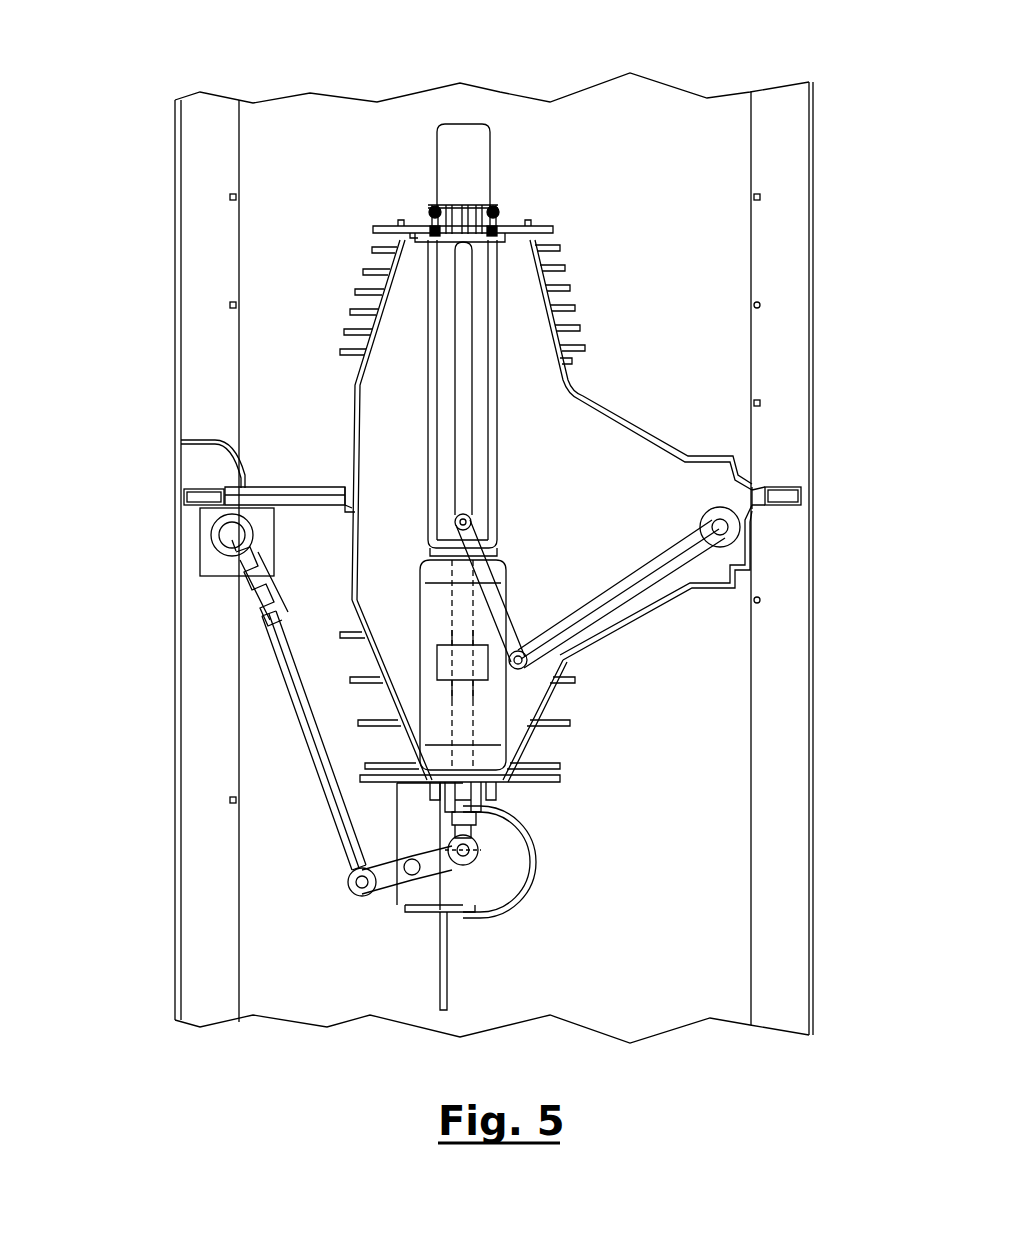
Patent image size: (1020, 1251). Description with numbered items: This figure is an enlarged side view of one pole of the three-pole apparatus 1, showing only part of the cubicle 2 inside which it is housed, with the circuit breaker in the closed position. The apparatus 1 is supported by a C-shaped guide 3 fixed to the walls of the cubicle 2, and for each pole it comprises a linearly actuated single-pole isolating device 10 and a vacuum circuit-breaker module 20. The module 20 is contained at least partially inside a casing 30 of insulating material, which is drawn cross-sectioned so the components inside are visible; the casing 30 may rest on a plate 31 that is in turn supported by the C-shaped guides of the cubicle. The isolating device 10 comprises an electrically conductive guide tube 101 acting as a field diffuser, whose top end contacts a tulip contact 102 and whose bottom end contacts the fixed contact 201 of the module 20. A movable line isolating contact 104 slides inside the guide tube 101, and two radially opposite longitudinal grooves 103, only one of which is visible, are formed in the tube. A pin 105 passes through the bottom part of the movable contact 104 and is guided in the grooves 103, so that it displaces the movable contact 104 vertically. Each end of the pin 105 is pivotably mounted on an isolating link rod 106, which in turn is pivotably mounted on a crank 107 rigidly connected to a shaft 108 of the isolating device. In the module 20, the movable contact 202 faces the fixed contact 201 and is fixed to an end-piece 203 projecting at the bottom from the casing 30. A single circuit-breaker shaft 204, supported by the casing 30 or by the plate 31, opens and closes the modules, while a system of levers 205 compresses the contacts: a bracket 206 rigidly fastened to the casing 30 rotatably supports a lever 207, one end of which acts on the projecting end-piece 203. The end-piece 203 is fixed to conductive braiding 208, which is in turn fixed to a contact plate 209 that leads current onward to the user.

The three-pole apparatus 1 is at (338, 176).
The cubicle 2 is at (172, 940).
The C-shaped guide 3 is at (177, 497).
The single-pole isolating device 10 is at (469, 392).
The vacuum circuit-breaker module 20 is at (451, 779).
The casing 30 is at (620, 415).
The plate 31 is at (183, 447).
The guide tube 101 is at (430, 290).
The tulip contact 102 is at (432, 205).
The longitudinal groove 103 is at (460, 330).
The movable line isolating contact 104 is at (492, 152).
The pin 105 is at (470, 518).
The isolating link rod 106 is at (522, 612).
The crank 107 is at (638, 590).
The shaft 108 is at (728, 535).
The fixed contact 201 is at (448, 615).
The movable contact 202 is at (478, 710).
The end-piece 203 is at (482, 800).
The circuit-breaker shaft 204 is at (238, 537).
The system of levers 205 is at (260, 758).
The bracket 206 is at (398, 815).
The lever 207 is at (372, 892).
The conductive braiding 208 is at (525, 893).
The contact plate 209 is at (450, 975).